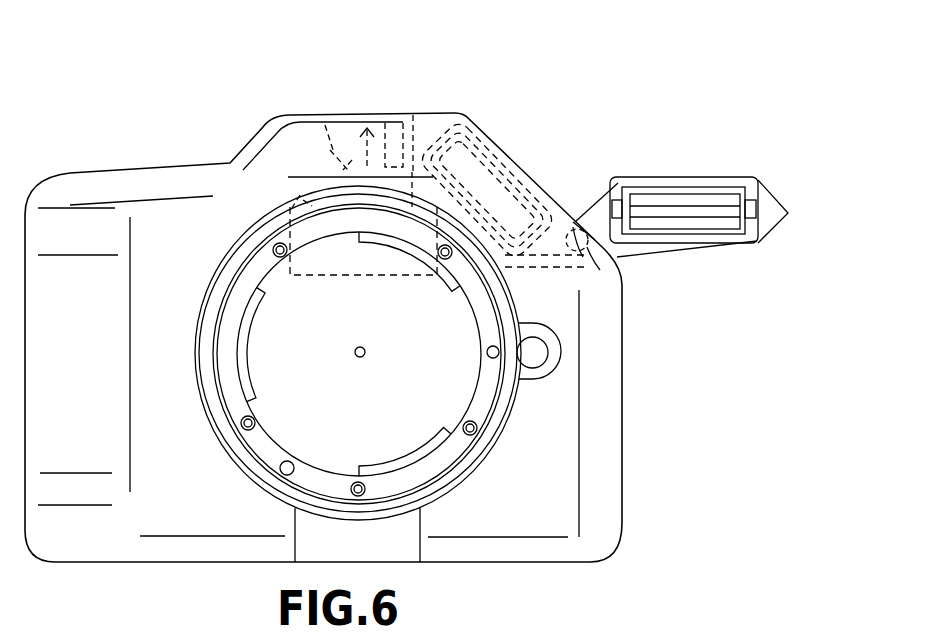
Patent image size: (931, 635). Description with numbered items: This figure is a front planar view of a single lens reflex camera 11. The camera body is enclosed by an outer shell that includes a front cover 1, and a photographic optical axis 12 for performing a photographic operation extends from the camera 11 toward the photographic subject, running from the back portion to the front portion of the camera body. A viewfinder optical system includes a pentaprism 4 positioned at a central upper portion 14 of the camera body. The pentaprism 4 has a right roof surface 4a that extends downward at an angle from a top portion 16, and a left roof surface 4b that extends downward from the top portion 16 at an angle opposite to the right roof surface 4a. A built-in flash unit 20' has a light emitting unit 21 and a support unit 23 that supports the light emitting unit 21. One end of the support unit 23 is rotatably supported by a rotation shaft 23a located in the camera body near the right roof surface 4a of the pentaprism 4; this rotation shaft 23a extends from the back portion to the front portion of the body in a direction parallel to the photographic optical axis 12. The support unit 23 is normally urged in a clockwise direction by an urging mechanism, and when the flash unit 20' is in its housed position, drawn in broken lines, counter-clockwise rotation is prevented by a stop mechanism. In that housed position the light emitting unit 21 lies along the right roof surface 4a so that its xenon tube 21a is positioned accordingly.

The front cover 1 is at (603, 423).
The pentaprism 4 is at (372, 277).
The right roof surface 4a is at (386, 116).
The left roof surface 4b is at (325, 125).
The camera 11 is at (567, 66).
The photographic optical axis 12 is at (366, 358).
The central upper portion 14 is at (388, 176).
The top portion 16 is at (333, 150).
The built-in flash unit 20' is at (588, 172).
The light emitting unit 21 is at (717, 190).
The xenon tube 21a is at (678, 207).
The support unit 23 is at (770, 200).
The rotation shaft 23a is at (587, 250).